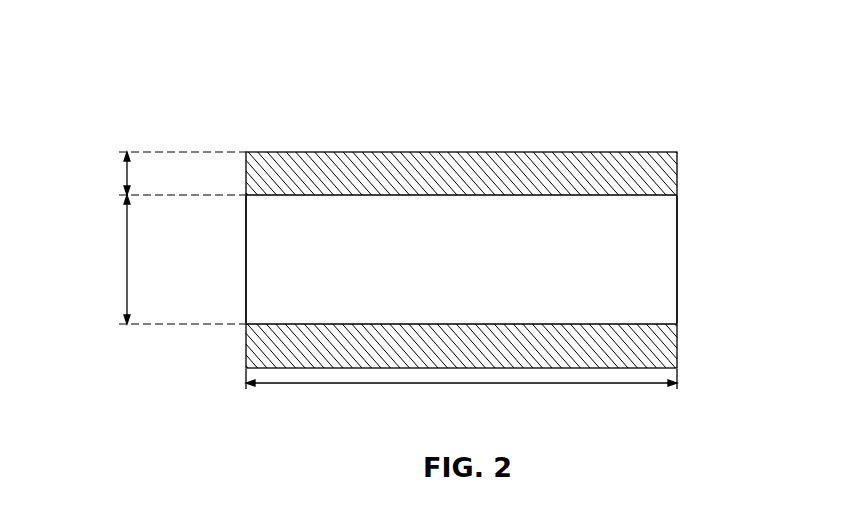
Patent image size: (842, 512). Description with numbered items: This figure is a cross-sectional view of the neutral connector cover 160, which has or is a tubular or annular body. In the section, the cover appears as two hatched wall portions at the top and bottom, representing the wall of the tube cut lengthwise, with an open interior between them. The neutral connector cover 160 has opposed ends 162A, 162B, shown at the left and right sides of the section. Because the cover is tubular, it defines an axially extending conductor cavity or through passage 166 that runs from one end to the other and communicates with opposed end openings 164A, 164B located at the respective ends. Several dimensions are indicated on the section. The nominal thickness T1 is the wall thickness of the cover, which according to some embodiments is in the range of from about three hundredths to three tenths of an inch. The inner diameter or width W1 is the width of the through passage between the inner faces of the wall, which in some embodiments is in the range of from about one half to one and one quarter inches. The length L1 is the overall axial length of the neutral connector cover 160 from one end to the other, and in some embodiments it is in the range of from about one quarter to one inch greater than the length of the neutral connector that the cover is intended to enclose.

The neutral connector cover 160 is at (588, 62).
The first end 162A is at (246, 151).
The second end 162B is at (677, 151).
The first end opening 164A is at (246, 250).
The second end opening 164B is at (677, 248).
The conductor cavity or through passage 166 is at (482, 262).
The nominal thickness T1 is at (125, 172).
The inner diameter or width W1 is at (125, 258).
The length L1 is at (460, 386).